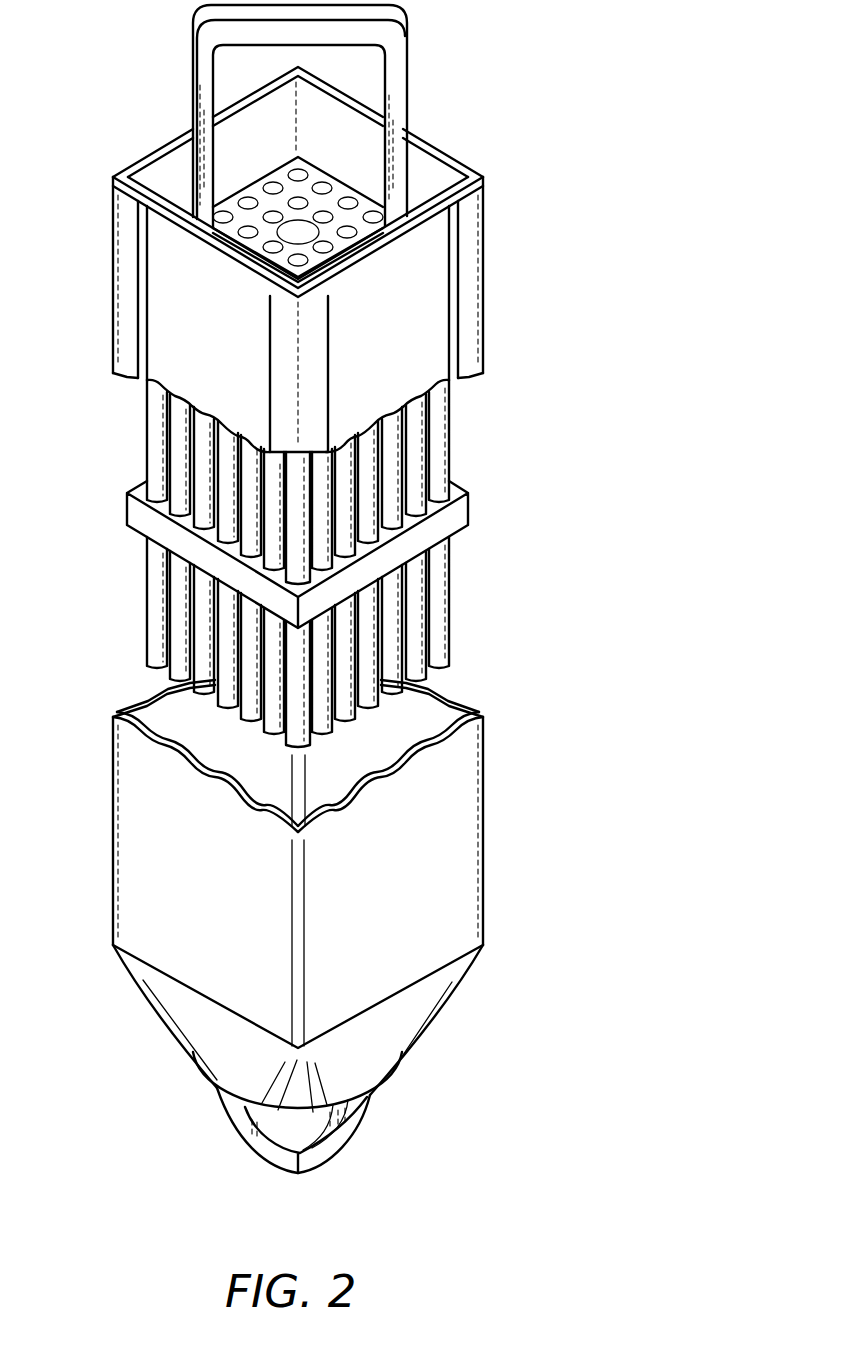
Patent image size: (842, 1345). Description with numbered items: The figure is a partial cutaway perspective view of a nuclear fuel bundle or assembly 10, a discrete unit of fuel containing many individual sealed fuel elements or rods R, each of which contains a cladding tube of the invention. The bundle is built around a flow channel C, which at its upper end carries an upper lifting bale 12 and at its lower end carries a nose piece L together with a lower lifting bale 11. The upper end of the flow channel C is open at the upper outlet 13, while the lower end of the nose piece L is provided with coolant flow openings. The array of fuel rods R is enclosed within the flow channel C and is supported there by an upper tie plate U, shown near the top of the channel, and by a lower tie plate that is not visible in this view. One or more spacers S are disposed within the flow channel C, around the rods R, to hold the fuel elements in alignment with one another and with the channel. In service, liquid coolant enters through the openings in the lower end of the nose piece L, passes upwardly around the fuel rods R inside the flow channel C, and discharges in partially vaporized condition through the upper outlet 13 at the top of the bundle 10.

The nuclear fuel bundle 10 is at (513, 222).
The upper lifting bale 12 is at (398, 43).
The upper outlet 13 is at (303, 233).
The upper tie plate U is at (316, 259).
The fuel rods R is at (143, 437).
The spacer S is at (462, 513).
The flow channel C is at (153, 835).
The nose piece L is at (402, 1020).
The lower lifting bale 11 is at (343, 1150).